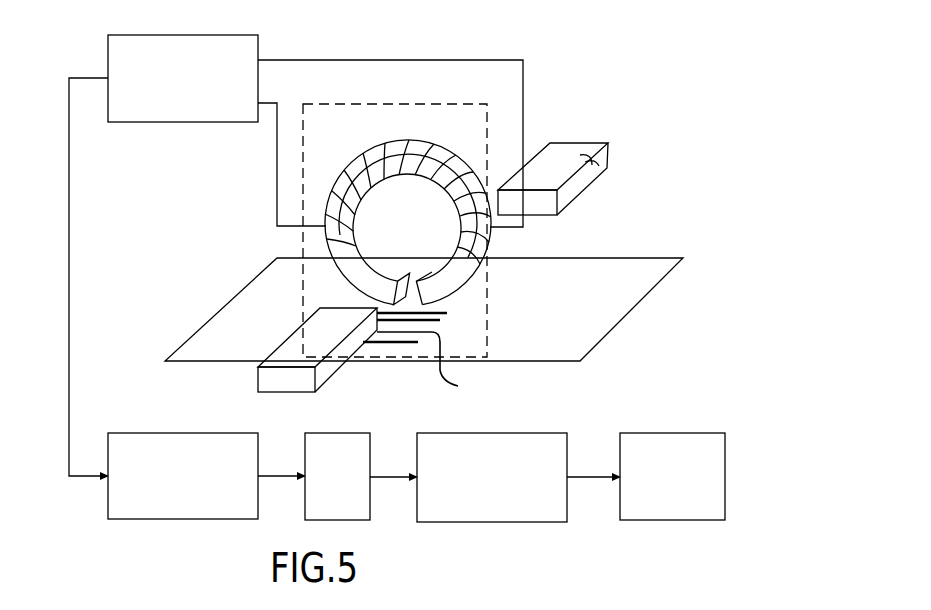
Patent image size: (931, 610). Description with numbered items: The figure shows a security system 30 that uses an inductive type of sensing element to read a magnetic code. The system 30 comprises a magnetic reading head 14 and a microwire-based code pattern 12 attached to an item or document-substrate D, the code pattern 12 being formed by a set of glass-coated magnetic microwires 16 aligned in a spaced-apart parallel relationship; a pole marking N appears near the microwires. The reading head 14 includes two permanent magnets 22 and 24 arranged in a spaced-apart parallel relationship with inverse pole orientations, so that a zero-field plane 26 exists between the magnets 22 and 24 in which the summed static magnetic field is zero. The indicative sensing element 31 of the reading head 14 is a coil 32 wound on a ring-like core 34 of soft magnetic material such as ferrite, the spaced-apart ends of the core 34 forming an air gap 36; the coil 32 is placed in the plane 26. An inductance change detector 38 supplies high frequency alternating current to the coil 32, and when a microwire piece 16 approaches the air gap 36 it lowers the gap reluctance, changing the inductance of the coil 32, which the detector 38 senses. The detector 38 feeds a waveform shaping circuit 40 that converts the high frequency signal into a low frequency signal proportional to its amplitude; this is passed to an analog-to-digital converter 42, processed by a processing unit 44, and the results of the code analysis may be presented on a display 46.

The magnetic marker or code pattern 12 is at (455, 317).
The magnetic reading head 14 is at (248, 206).
The glass-coated magnetic microwire 16 is at (434, 366).
The permanent magnet 22 is at (325, 369).
The permanent magnet 24 is at (598, 180).
The zero-field plane 26 is at (342, 134).
The security system 30 is at (645, 46).
The inductive sensing element 31 is at (386, 126).
The coil 32 is at (419, 190).
The ring-like core 34 is at (435, 152).
The air gap 36 is at (408, 222).
The inductance change detector 38 is at (158, 122).
The waveform shaping circuit 40 is at (195, 433).
The analog-to-digital converter 42 is at (338, 433).
The processing unit 44 is at (495, 433).
The display 46 is at (665, 433).
The document-substrate D is at (625, 273).
The pole marking N is at (364, 334).